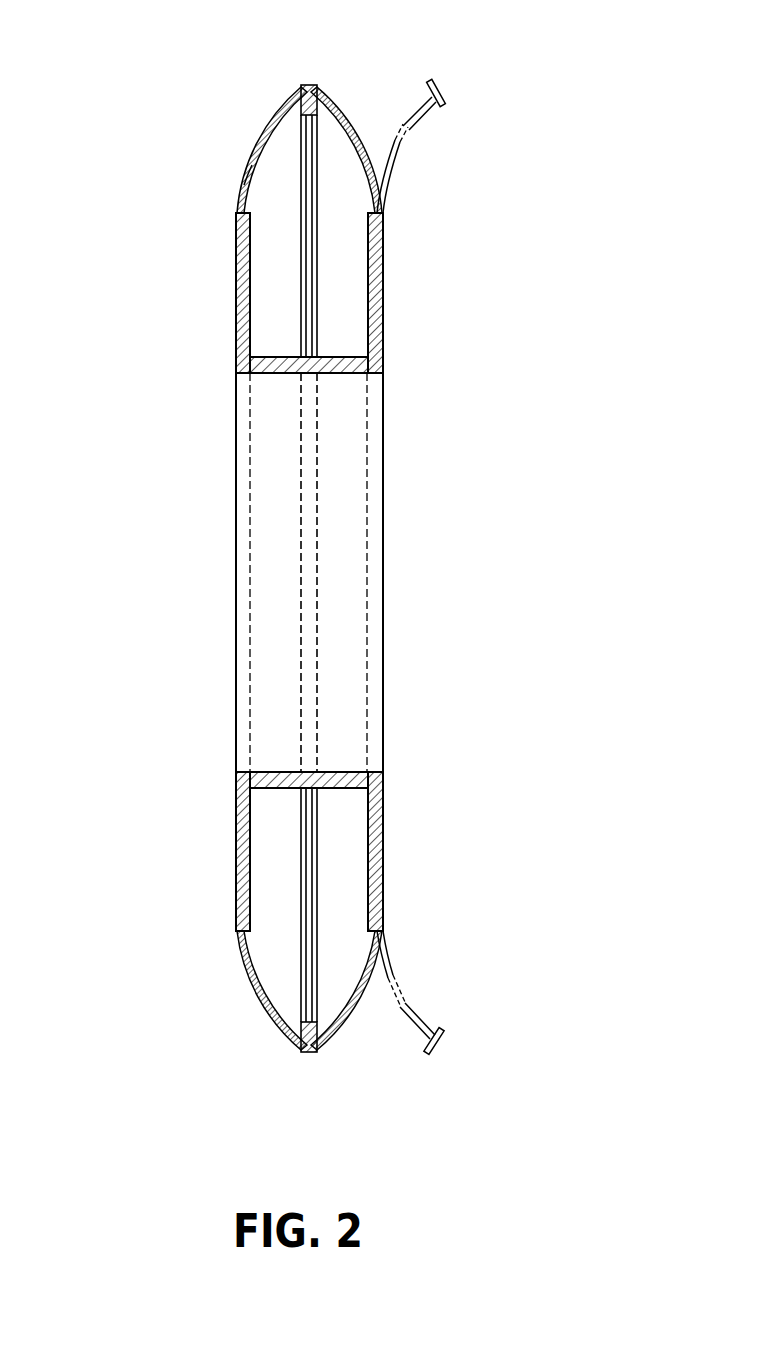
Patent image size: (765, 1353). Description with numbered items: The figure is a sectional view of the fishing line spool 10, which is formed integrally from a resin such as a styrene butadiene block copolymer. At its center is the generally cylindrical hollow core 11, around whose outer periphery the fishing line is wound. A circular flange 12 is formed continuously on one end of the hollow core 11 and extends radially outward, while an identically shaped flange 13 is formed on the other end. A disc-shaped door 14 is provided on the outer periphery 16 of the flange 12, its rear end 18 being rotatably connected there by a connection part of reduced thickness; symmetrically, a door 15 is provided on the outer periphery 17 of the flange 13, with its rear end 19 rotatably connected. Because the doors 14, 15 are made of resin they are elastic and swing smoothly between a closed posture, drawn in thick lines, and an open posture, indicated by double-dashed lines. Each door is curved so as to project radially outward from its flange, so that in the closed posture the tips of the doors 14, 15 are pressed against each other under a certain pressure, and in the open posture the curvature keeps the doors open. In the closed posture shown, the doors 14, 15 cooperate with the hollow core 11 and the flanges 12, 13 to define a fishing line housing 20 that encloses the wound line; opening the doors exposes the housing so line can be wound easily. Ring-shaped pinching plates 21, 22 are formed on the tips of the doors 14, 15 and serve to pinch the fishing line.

The fishing line spool 10 is at (120, 93).
The hollow core 11 is at (343, 372).
The flange 12 is at (383, 342).
The flange 13 is at (236, 313).
The door 14 is at (335, 115).
The door 15 is at (265, 135).
The outer periphery 16 is at (383, 203).
The outer periphery 17 is at (237, 210).
The rear end 18 is at (368, 172).
The rear end 19 is at (247, 182).
The fishing line housing 20 is at (342, 298).
The pinching plate 21 is at (318, 89).
The pinching plate 22 is at (300, 89).